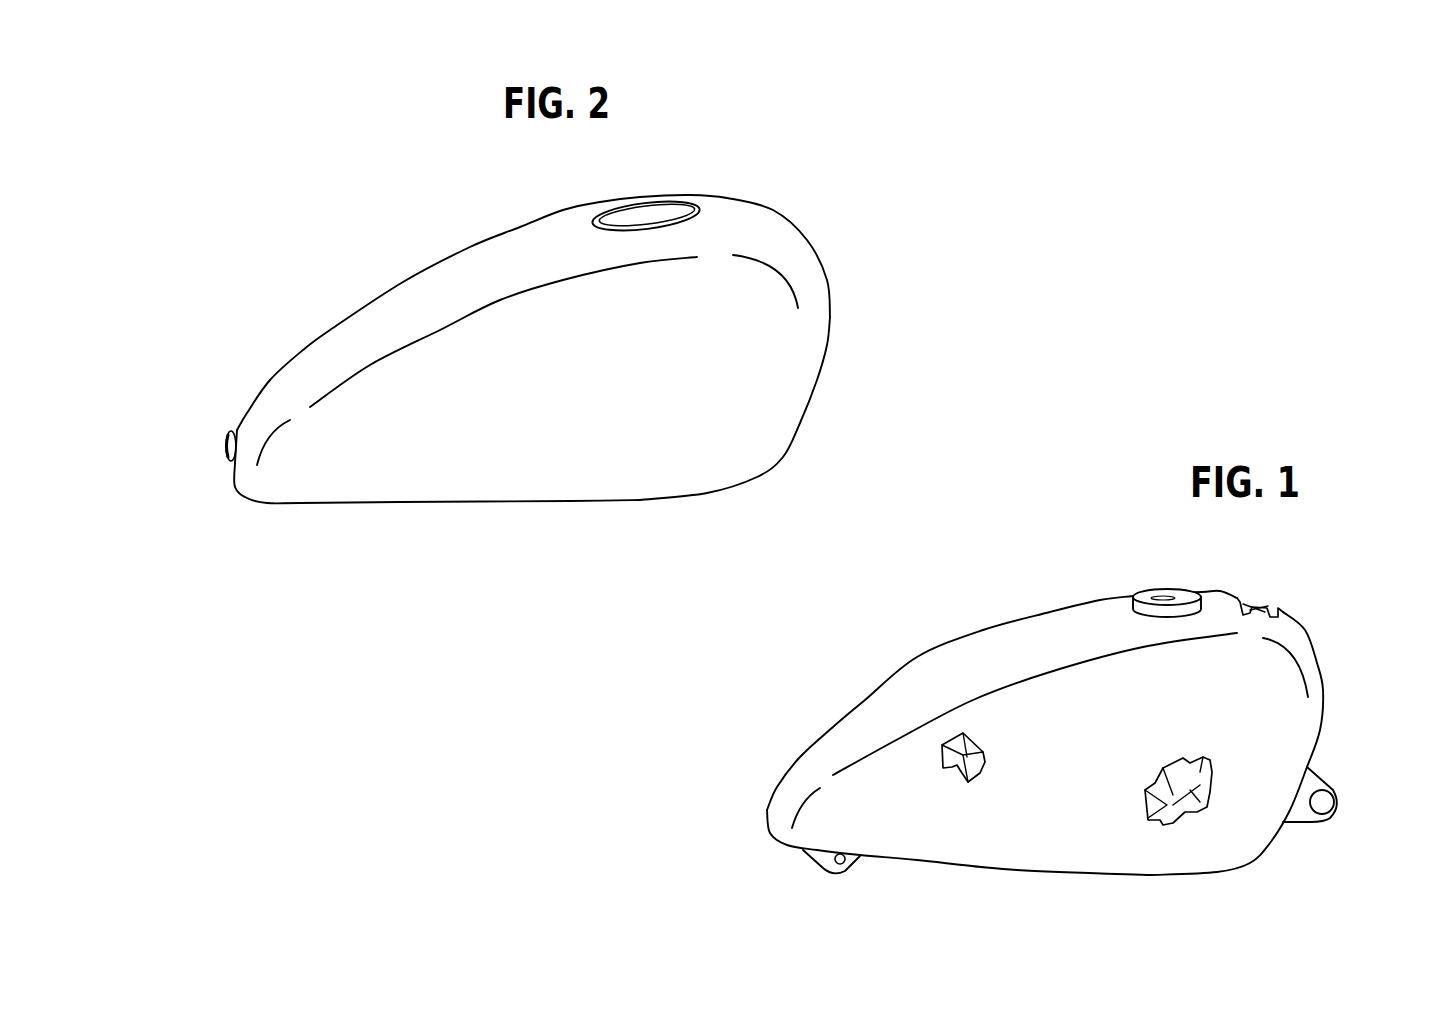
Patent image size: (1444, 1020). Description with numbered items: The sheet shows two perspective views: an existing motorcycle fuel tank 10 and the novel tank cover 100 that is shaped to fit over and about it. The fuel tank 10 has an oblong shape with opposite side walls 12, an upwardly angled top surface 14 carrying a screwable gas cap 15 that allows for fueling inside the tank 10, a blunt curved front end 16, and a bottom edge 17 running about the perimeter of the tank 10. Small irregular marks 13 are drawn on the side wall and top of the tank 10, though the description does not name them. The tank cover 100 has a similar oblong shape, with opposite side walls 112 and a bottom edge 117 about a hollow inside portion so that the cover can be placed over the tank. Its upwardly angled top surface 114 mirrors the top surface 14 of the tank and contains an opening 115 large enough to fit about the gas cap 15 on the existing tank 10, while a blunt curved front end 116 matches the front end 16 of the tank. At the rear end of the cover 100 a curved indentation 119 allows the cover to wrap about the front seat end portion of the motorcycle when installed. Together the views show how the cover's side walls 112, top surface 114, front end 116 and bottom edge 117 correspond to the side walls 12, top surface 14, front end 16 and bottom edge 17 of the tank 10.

In FIG. 1, the motorcycle fuel tank 10 is at (1126, 548).
In FIG. 1, the side walls 12 is at (922, 743).
In FIG. 1, the emblem/decorative feature 13 is at (1263, 608).
In FIG. 1, the top surface 14 is at (1015, 643).
In FIG. 1, the gas cap 15 is at (1198, 597).
In FIG. 1, the front end 16 is at (1325, 687).
In FIG. 1, the bottom edge 17 is at (1010, 870).
In FIG. 2, the tank cover 100 is at (470, 218).
In FIG. 2, the side walls 112 is at (460, 465).
In FIG. 2, the top surface 114 is at (407, 310).
In FIG. 2, the opening 115 is at (650, 208).
In FIG. 2, the front end 116 is at (818, 278).
In FIG. 2, the bottom edge 117 is at (640, 500).
In FIG. 2, the curved indentation 119 is at (235, 467).